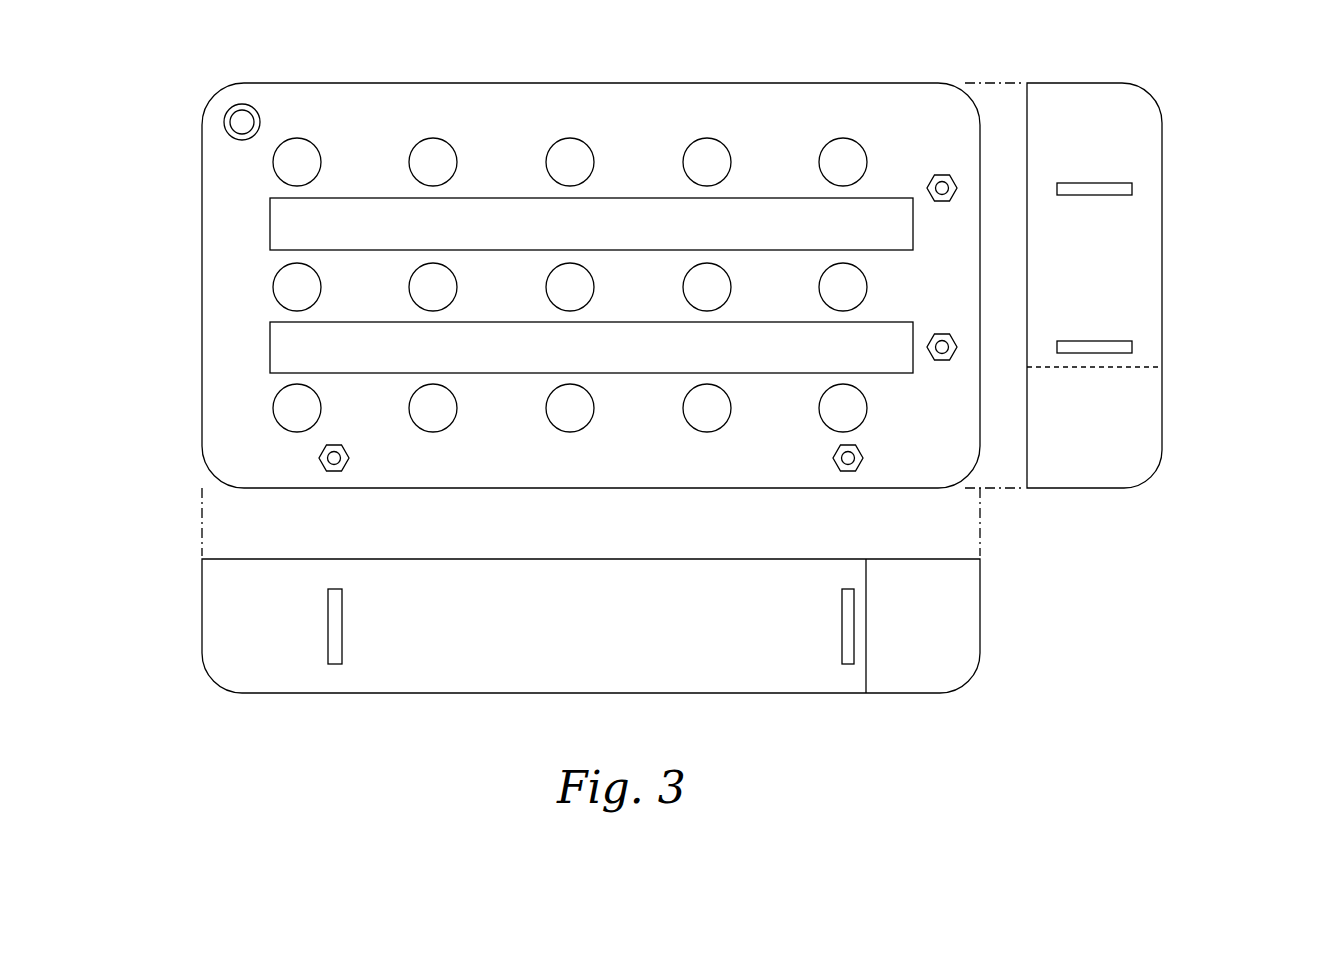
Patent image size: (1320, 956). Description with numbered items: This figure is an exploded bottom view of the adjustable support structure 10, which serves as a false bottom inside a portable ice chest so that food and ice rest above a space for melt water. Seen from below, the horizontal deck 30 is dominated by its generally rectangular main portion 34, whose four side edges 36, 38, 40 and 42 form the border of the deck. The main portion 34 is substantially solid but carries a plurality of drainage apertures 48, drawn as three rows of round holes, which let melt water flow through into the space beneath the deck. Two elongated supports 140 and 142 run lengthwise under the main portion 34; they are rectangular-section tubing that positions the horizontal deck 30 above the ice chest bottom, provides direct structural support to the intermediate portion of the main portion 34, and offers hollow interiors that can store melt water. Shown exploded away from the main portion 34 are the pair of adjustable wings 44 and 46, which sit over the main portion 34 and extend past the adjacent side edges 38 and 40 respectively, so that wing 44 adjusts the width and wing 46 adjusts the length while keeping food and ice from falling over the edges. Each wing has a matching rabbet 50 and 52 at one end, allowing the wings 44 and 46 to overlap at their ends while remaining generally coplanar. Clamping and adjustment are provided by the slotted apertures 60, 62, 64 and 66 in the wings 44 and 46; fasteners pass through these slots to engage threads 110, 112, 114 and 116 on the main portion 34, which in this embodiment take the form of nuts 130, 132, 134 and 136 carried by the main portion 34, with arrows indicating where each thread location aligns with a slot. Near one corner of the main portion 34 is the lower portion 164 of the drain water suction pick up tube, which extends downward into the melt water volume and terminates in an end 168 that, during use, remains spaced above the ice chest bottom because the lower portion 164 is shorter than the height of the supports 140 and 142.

The adjustable support structure 10 is at (1195, 52).
The horizontal deck 30 is at (1010, 540).
The main portion 34 is at (573, 108).
The side edge 36 is at (202, 270).
The side edge 38 is at (566, 488).
The side edge 40 is at (981, 190).
The side edge 42 is at (468, 83).
The adjustable wing 44 is at (650, 655).
The adjustable wing 46 is at (1140, 268).
The drainage apertures 48 is at (707, 138).
The rabbet 50 is at (923, 655).
The rabbet 52 is at (1118, 432).
The slotted aperture 60 is at (342, 628).
The slotted aperture 62 is at (840, 624).
The slotted aperture 64 is at (1090, 341).
The slotted aperture 66 is at (1096, 183).
The threads 110 is at (364, 458).
The threads 112 is at (882, 450).
The threads 114 is at (948, 322).
The threads 116 is at (938, 130).
The nut 130 is at (319, 458).
The nut 132 is at (833, 458).
The nut 134 is at (942, 362).
The nut 136 is at (942, 203).
The support 140 is at (498, 222).
The support 142 is at (500, 346).
The lower portion 164 is at (259, 110).
The end 168 is at (224, 120).